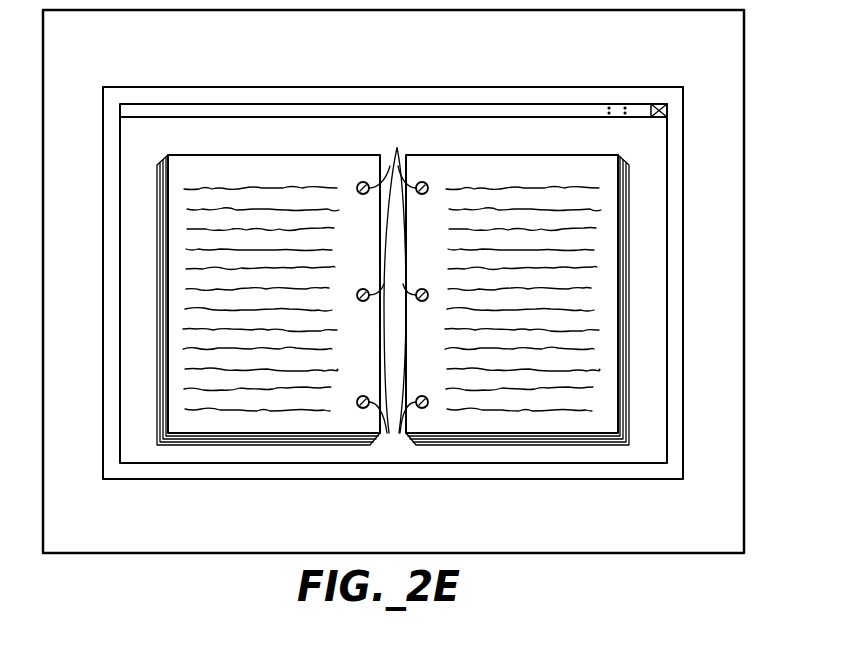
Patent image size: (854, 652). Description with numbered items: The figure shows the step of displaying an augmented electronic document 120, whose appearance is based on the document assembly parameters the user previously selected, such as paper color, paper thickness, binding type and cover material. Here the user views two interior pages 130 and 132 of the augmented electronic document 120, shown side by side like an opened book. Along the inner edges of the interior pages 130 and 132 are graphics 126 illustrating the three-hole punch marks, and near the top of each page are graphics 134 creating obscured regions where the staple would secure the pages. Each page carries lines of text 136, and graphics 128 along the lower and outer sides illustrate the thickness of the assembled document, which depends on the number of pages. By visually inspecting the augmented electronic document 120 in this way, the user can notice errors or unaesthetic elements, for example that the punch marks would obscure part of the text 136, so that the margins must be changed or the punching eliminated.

The augmented electronic document 120 is at (642, 215).
The graphics illustrating punch marks 126 is at (397, 152).
The graphics illustrating the thickness of the assembled document 128 is at (265, 445).
The interior page 130 is at (234, 153).
The interior page 132 is at (413, 172).
The graphics creating obscured regions 134 is at (372, 172).
The text 136 is at (594, 348).